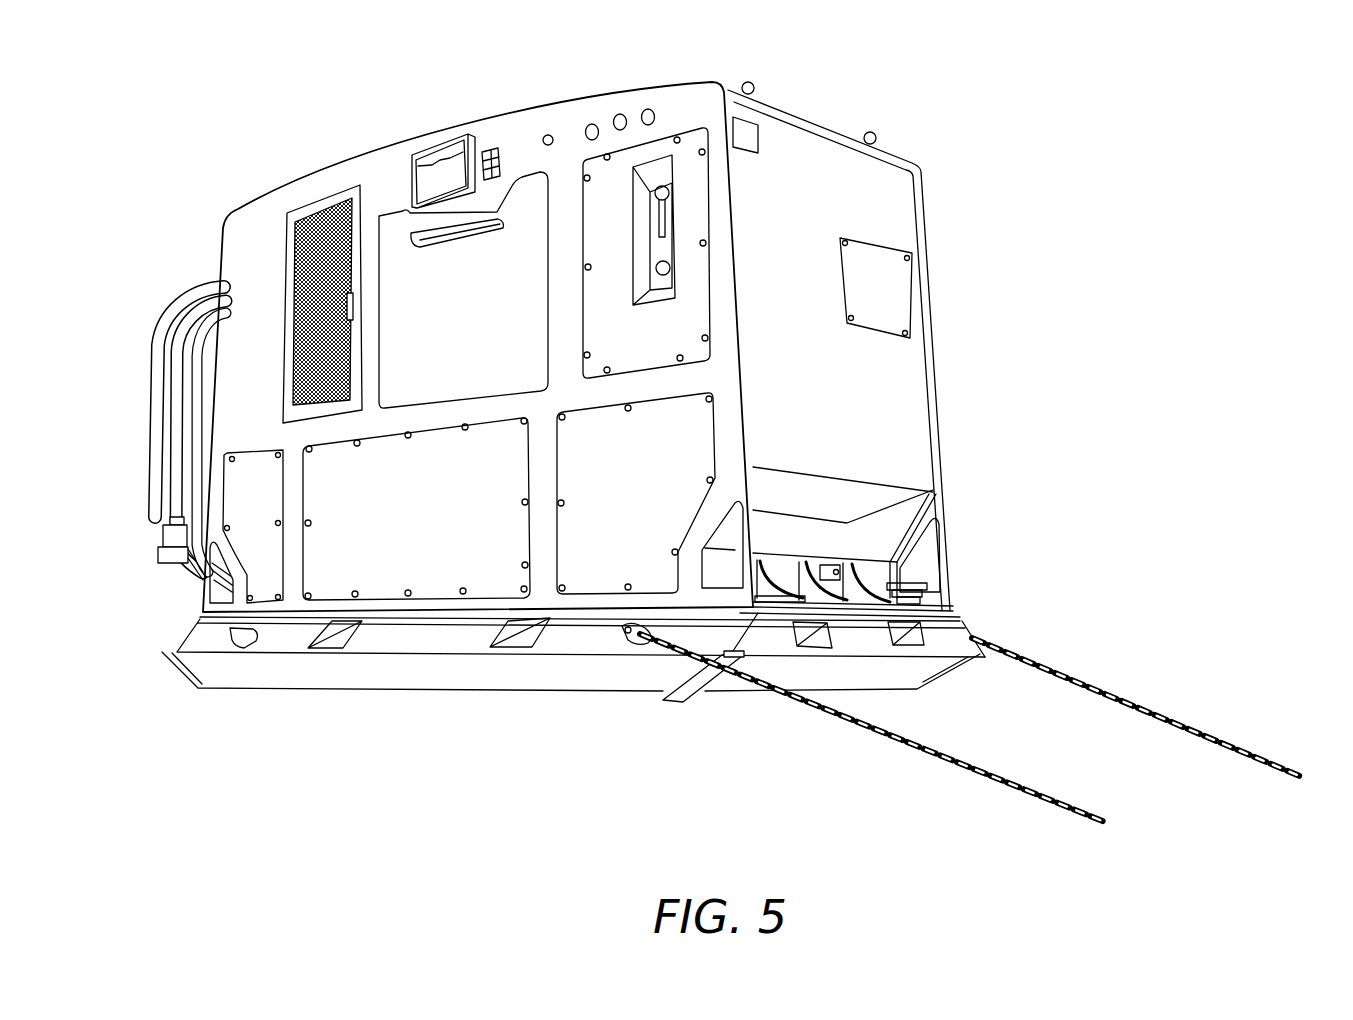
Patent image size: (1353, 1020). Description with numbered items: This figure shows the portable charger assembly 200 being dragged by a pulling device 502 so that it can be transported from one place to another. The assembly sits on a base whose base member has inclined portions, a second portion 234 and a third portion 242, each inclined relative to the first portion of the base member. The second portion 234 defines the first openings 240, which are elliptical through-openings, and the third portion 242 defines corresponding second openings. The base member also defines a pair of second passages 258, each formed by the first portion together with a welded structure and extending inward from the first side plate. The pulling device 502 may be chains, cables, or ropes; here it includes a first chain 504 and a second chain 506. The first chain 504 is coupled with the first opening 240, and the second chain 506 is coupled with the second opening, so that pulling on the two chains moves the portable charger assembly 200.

The portable charger assembly 200 is at (946, 110).
The second portion 234 is at (475, 641).
The first opening 240 is at (227, 631).
The third portion 242 is at (968, 627).
The second passage 258 is at (840, 654).
The pulling device 502 is at (1080, 626).
The first chain 504 is at (946, 760).
The second chain 506 is at (1182, 720).